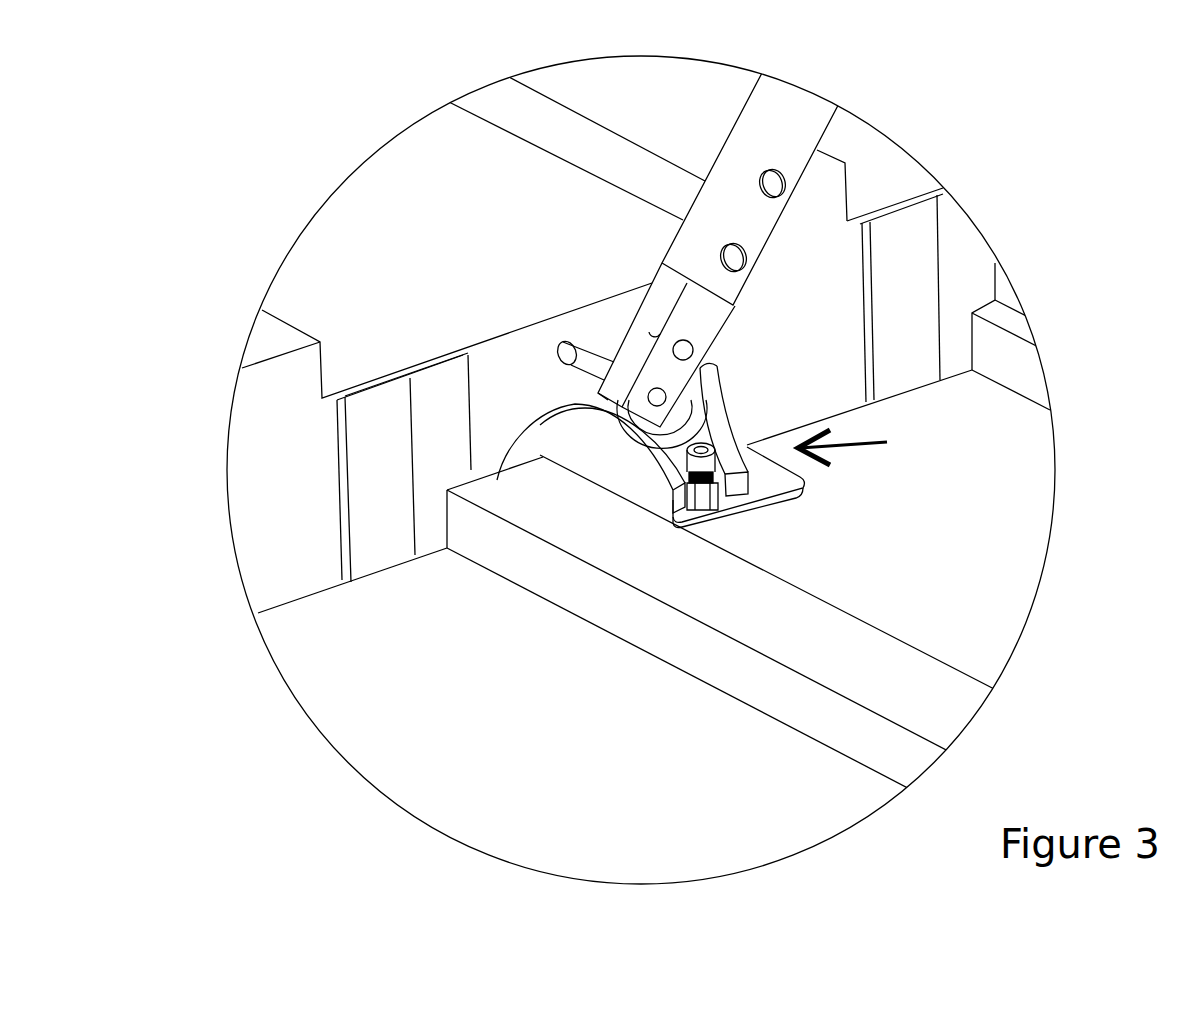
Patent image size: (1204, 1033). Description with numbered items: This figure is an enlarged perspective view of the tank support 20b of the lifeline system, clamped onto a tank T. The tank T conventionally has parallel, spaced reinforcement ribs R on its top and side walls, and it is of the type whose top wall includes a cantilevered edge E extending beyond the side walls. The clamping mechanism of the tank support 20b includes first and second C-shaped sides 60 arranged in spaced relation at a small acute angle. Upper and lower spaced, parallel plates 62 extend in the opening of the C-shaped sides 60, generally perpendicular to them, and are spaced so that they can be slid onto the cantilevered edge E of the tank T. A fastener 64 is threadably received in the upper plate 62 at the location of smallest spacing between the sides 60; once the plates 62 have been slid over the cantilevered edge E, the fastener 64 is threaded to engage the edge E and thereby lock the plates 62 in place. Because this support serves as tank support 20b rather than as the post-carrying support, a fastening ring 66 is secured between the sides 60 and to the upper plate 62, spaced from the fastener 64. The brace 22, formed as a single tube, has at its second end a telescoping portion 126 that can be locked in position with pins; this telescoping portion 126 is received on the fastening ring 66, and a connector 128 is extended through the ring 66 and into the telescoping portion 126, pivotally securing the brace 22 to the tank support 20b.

The brace 22 is at (795, 128).
The telescoping portion 126 is at (705, 317).
The connector 128 is at (583, 358).
The fastening ring 66 is at (612, 405).
The C-shaped sides 60 is at (590, 452).
The plates 62 is at (770, 473).
The fastener 64 is at (702, 463).
The tank support 20b is at (873, 446).
The tank T is at (340, 220).
The reinforcement ribs R is at (603, 138).
The cantilevered edge E is at (837, 408).